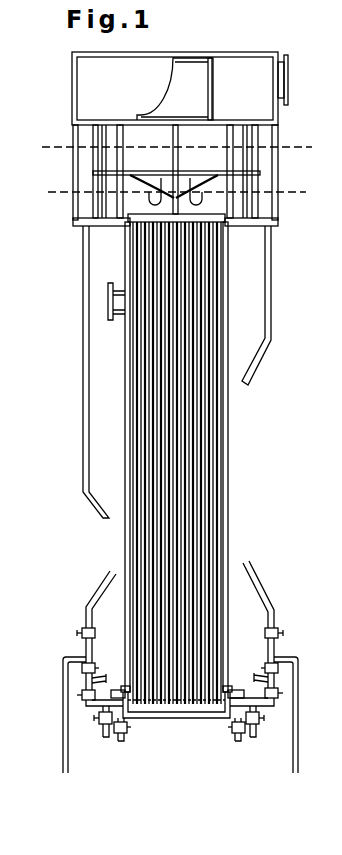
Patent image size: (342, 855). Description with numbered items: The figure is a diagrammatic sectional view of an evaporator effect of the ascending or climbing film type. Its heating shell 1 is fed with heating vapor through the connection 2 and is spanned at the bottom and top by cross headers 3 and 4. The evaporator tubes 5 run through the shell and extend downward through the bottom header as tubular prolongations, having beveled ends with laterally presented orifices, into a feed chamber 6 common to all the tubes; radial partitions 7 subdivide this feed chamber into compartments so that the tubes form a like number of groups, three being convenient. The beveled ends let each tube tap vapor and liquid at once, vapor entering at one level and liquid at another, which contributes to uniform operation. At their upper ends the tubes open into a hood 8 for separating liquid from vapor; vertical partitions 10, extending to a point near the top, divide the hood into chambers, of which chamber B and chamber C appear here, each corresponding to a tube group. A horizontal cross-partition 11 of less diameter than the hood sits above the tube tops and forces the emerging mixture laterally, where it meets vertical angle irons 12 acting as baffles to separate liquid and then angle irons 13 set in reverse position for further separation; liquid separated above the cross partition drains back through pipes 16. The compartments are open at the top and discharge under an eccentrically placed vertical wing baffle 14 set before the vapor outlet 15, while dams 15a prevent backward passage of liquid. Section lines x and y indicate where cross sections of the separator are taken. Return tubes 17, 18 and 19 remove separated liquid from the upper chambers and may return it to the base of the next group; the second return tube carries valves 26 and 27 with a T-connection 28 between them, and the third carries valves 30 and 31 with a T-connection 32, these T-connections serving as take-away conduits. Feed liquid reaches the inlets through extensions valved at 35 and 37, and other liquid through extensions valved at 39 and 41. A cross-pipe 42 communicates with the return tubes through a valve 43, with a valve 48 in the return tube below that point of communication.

The heating shell 1 is at (228, 340).
The heating vapor inlet 2 is at (112, 306).
The bottom cross header 3 is at (238, 690).
The top cross header 4 is at (228, 227).
The evaporator tubes 5 is at (203, 555).
The feed chamber 6 is at (208, 712).
The radial partitions 7 is at (175, 713).
The hood 8 is at (277, 134).
The vertical partitions 10 is at (178, 141).
The horizontal cross-partition 11 is at (216, 176).
The vertical angle irons 12 is at (113, 212).
The angle irons 13 is at (118, 141).
The vertical wing baffle 14 is at (212, 78).
The vapor outlet 15 is at (288, 77).
The dams 15a is at (180, 214).
The drain pipes 16 is at (88, 225).
The first return tube 17 is at (84, 380).
The second return tube 18 is at (265, 588).
The third return tube 19 is at (272, 297).
The valve 26 is at (279, 633).
The valve 27 is at (278, 667).
The T-connection 28 is at (294, 741).
The valve 30 is at (77, 633).
The valve 31 is at (82, 668).
The T-connection 32 is at (64, 690).
The valve 35 is at (121, 735).
The valve 37 is at (262, 718).
The valve 39 is at (103, 725).
The valve 41 is at (238, 735).
The cross-pipe 42 is at (101, 679).
The valve 43 is at (84, 697).
The valve 48 is at (279, 693).
The hood chamber B is at (280, 178).
The hood chamber C is at (78, 170).
The section line x- x is at (176, 192).
The section line y- y is at (175, 147).